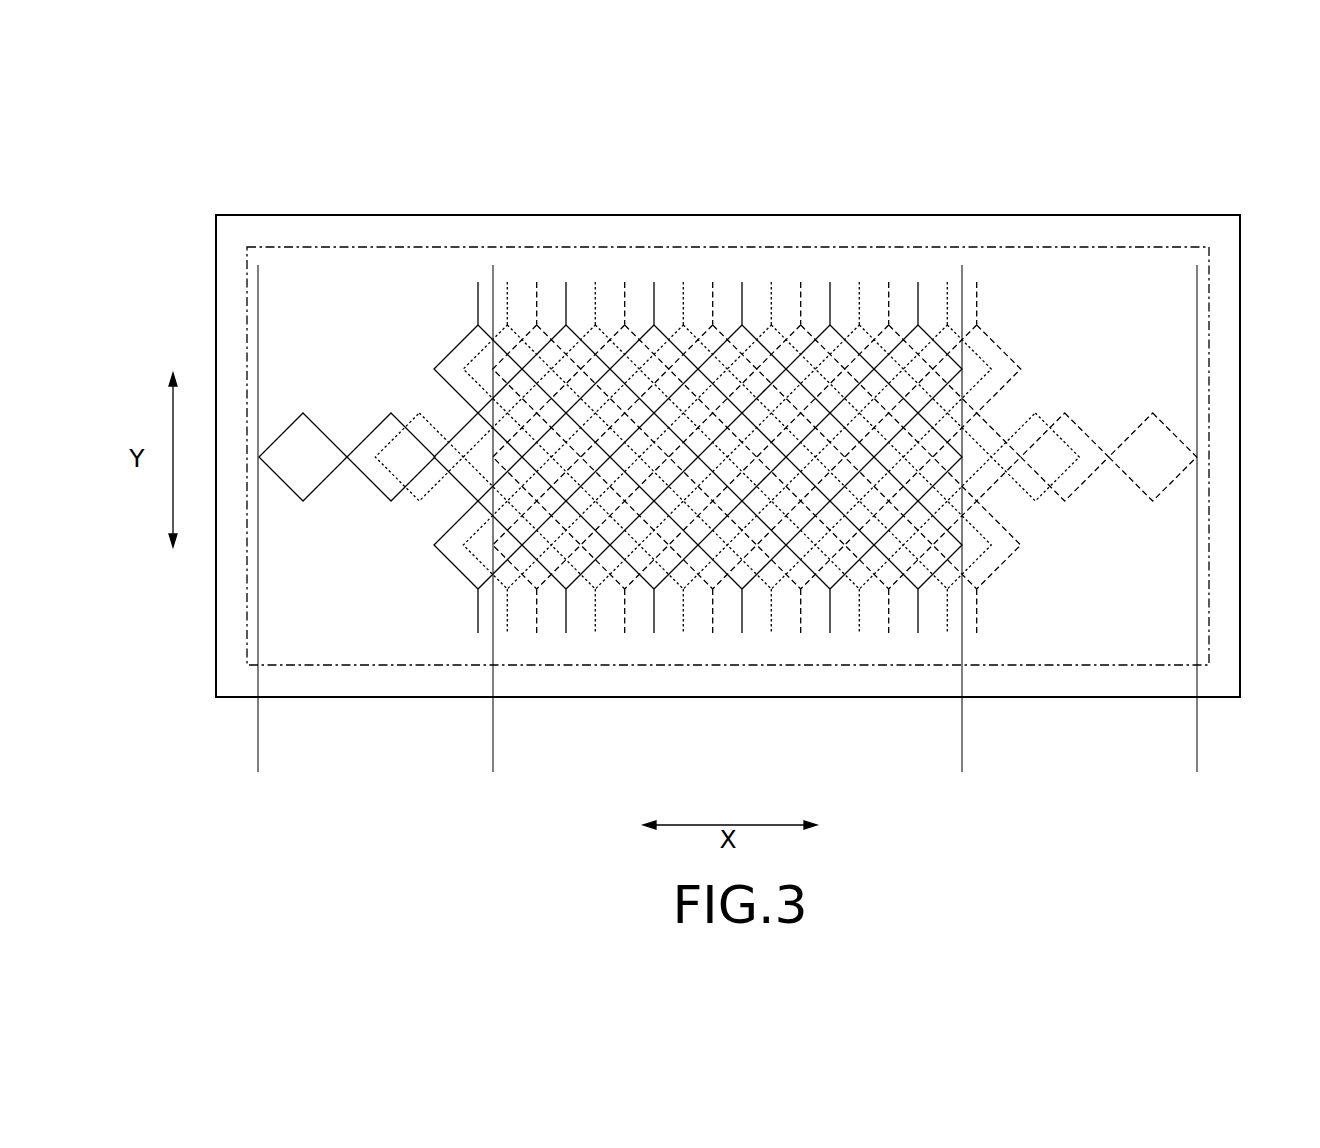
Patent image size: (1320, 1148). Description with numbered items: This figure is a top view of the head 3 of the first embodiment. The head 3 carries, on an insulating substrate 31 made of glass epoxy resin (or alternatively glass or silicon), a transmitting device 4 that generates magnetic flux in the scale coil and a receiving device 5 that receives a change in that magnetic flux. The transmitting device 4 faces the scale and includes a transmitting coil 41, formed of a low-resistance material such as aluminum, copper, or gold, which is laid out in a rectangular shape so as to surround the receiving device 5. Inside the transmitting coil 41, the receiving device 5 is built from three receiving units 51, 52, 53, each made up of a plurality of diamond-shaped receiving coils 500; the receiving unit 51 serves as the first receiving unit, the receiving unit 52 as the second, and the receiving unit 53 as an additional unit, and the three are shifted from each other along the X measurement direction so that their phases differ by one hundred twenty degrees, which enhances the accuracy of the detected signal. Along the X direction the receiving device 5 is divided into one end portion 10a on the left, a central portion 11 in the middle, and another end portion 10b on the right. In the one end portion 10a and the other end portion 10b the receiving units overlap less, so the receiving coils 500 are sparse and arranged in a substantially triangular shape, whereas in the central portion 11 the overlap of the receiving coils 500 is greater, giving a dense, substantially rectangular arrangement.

The head 3 is at (1210, 158).
The insulating substrate 31 is at (1068, 223).
The transmitting device 4 is at (912, 240).
The transmitting coil 41 is at (812, 248).
The receiving device 5 is at (1037, 387).
The receiving unit 51 is at (373, 415).
The receiving coils 500 is at (370, 480).
The receiving unit 52 is at (1080, 418).
The receiving unit 53 is at (1035, 500).
The one end portion 10a is at (492, 741).
The central portion 11 is at (494, 741).
The other end portion 10b is at (963, 741).